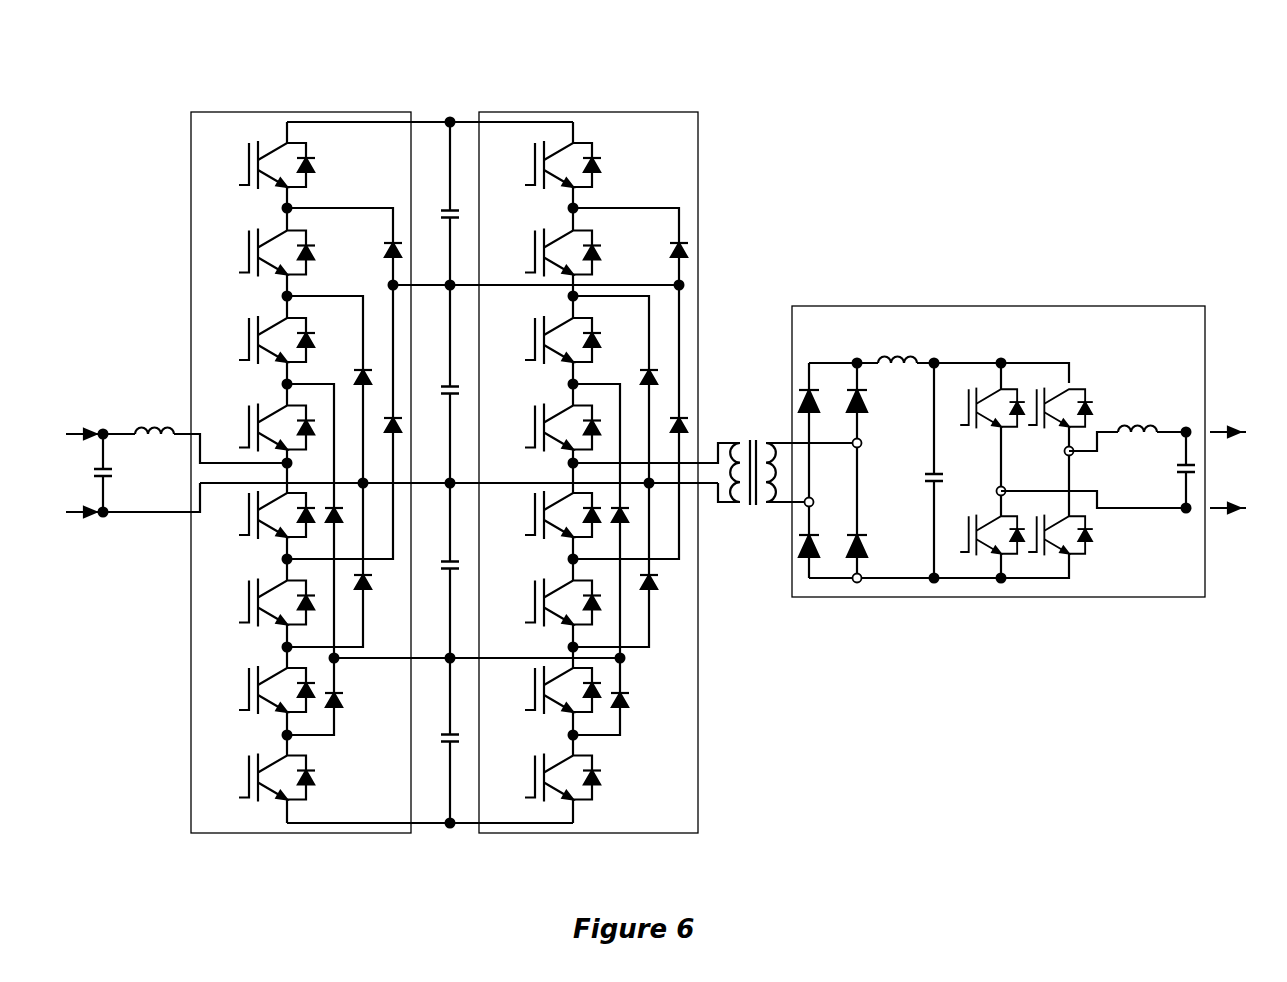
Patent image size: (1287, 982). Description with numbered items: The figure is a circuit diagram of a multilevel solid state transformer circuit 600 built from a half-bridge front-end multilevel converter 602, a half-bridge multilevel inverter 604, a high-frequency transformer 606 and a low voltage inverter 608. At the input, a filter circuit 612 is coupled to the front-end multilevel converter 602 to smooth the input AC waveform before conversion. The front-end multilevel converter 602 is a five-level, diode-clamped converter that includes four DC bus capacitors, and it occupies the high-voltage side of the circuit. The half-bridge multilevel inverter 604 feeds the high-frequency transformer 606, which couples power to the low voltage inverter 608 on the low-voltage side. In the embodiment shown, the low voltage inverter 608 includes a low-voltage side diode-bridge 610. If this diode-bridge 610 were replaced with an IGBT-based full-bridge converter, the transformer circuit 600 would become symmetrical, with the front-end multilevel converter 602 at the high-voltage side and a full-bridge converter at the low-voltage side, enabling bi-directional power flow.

The multilevel solid state transformer circuit 600 is at (665, 46).
The half-bridge front-end multilevel converter 602 is at (411, 112).
The half-bridge multilevel inverter 604 is at (698, 112).
The high-frequency transformer 606 is at (757, 410).
The low voltage inverter 608 is at (1205, 306).
The low-voltage side diode-bridge 610 is at (856, 356).
The filter circuit 612 is at (134, 387).